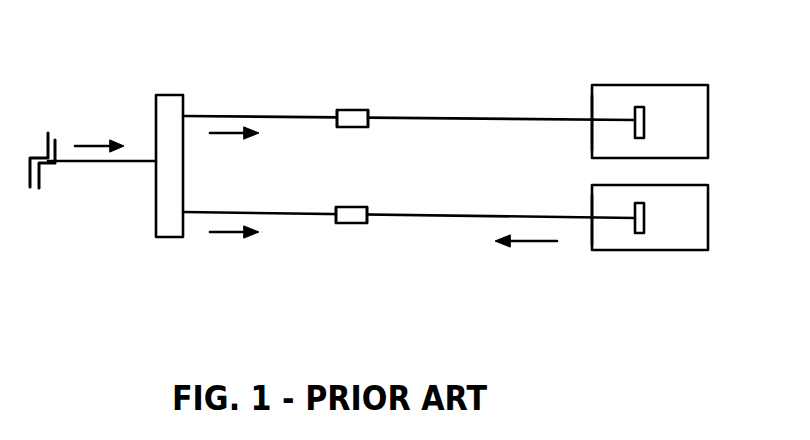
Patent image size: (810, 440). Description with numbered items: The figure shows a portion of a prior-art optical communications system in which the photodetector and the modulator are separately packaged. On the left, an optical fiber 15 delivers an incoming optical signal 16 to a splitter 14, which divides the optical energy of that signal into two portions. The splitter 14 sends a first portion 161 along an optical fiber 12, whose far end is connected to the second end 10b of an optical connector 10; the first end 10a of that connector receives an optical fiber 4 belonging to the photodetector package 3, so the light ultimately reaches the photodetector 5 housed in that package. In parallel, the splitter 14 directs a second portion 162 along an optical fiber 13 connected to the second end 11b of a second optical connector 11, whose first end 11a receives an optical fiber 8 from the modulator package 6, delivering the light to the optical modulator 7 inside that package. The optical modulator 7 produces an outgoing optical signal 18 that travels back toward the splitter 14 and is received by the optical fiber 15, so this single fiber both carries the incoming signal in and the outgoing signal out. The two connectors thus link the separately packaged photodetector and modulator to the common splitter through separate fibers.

The photodetector package 3 is at (710, 102).
The optical fiber 4 is at (608, 113).
The photodetector 5 is at (642, 98).
The modulator package 6 is at (675, 257).
The optical modulator 7 is at (642, 235).
The optical fiber 8 is at (613, 230).
The optical connector 10 is at (350, 110).
The first end of optical connector 10a is at (370, 108).
The second end of optical connector 10b is at (338, 108).
The optical connector 11 is at (350, 207).
The first end of optical connector 11a is at (368, 205).
The second end of optical connector 11b is at (337, 205).
The optical fiber 12 is at (220, 112).
The optical fiber 13 is at (300, 220).
The splitter 14 is at (173, 248).
The optical fiber 15 is at (143, 170).
The incoming optical signal 16 is at (88, 138).
The first portion of incoming optical signal 161 is at (230, 140).
The second portion of incoming optical signal 162 is at (230, 245).
The outgoing optical signal 18 is at (528, 248).